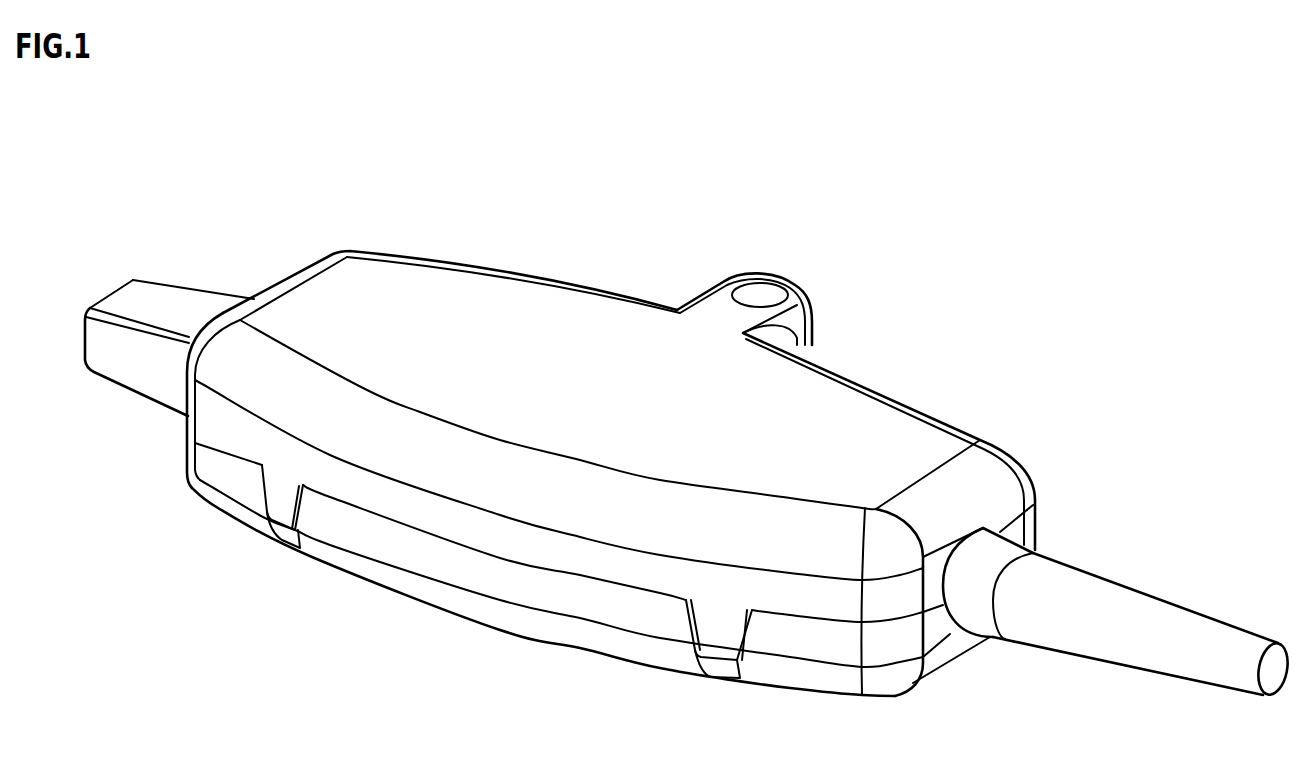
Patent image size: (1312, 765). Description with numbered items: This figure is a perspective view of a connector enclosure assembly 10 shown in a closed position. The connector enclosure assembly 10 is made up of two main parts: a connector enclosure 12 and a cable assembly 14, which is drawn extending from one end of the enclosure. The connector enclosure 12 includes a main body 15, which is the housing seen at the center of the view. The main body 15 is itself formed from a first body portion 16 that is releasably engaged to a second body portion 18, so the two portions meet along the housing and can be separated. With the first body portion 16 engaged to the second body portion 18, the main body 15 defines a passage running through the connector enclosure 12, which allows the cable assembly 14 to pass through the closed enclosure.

The connector enclosure assembly 10 is at (1070, 250).
The connector enclosure 12 is at (418, 248).
The cable assembly 14 is at (1133, 553).
The main body 15 is at (890, 423).
The first body portion 16 is at (247, 427).
The second body portion 18 is at (475, 570).